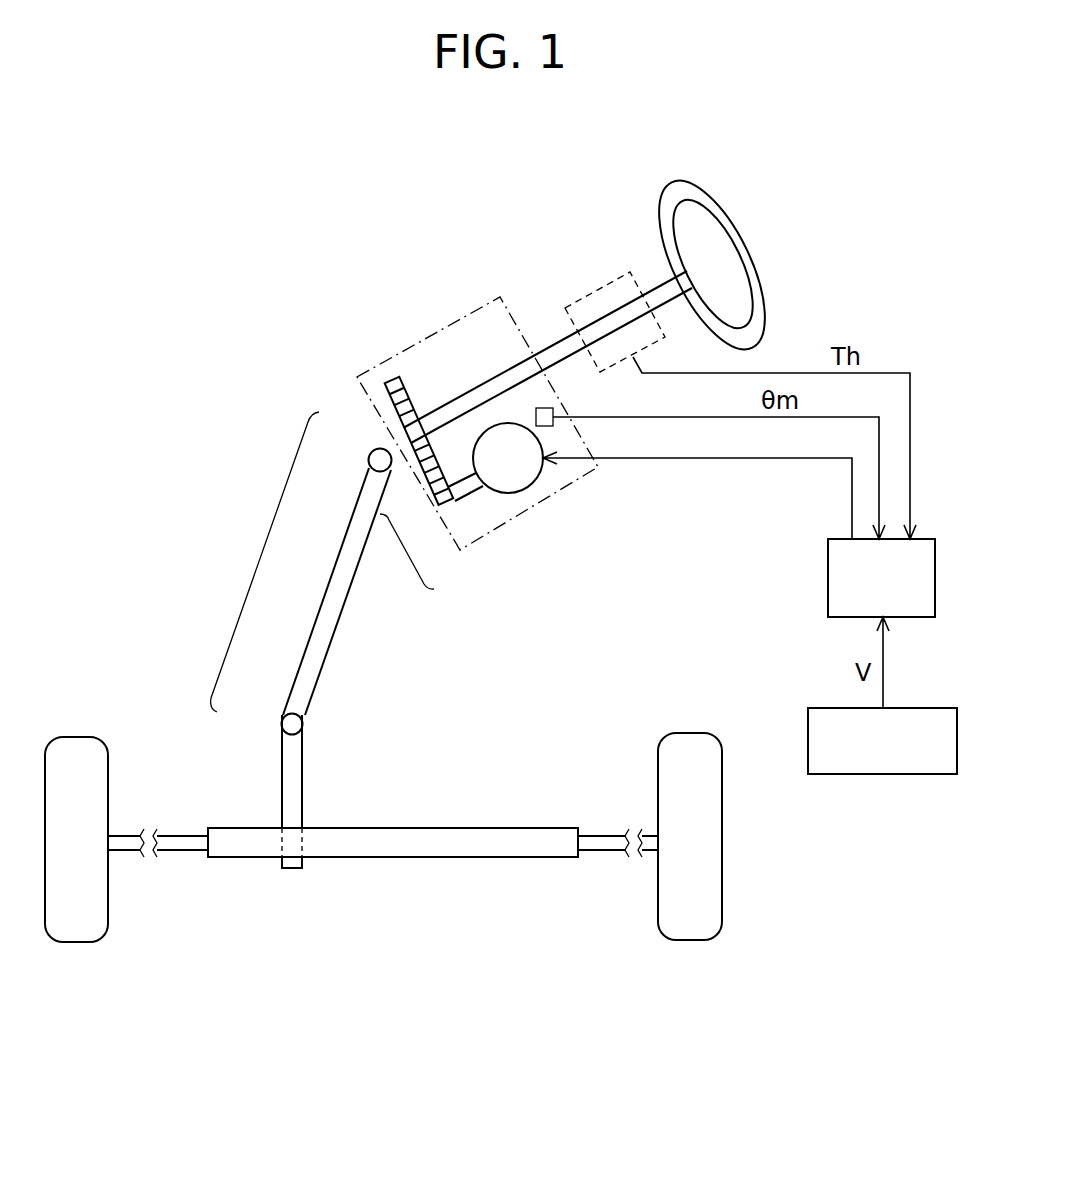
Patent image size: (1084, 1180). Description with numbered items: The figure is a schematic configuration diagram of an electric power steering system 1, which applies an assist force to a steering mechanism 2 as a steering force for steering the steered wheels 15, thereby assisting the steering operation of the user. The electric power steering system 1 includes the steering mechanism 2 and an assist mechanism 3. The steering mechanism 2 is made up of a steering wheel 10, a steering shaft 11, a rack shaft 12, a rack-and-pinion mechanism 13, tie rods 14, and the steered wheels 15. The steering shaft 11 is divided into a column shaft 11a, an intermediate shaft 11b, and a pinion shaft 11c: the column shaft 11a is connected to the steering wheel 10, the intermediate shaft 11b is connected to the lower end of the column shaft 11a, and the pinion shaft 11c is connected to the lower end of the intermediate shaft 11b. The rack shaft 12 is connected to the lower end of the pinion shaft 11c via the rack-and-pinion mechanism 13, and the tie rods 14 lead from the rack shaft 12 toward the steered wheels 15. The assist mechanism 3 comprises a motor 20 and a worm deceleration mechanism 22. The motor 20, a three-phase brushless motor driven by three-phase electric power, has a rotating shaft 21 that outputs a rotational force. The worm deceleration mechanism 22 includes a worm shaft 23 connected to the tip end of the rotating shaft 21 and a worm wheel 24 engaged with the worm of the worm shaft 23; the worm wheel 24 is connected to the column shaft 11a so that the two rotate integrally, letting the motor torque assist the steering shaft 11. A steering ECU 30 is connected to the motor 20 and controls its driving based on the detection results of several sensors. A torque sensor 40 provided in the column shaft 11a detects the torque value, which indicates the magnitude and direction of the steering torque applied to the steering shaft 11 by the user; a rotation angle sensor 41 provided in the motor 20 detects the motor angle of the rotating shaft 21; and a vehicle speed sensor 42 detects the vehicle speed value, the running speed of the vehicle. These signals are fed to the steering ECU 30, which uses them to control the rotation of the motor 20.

The electric power steering system 1 is at (174, 215).
The steering mechanism 2 is at (181, 446).
The assist mechanism 3 is at (496, 300).
The steering wheel 10 is at (747, 245).
The steering shaft 11 is at (260, 558).
The column shaft 11a is at (369, 452).
The intermediate shaft 11b is at (328, 587).
The pinion shaft 11c is at (282, 740).
The rack shaft 12 is at (428, 858).
The rack-and-pinion mechanism 13 is at (257, 817).
The tie rods 14 is at (178, 853).
The steered wheels 15 is at (75, 942).
The motor 20 is at (510, 493).
The rotating shaft 21 is at (478, 491).
The worm deceleration mechanism 22 is at (406, 564).
The worm shaft 23 is at (460, 487).
The worm wheel 24 is at (412, 479).
The steering ECU 30 is at (828, 579).
The torque sensor 40 is at (597, 290).
The rotation angle sensor 41 is at (553, 410).
The vehicle speed sensor 42 is at (808, 742).